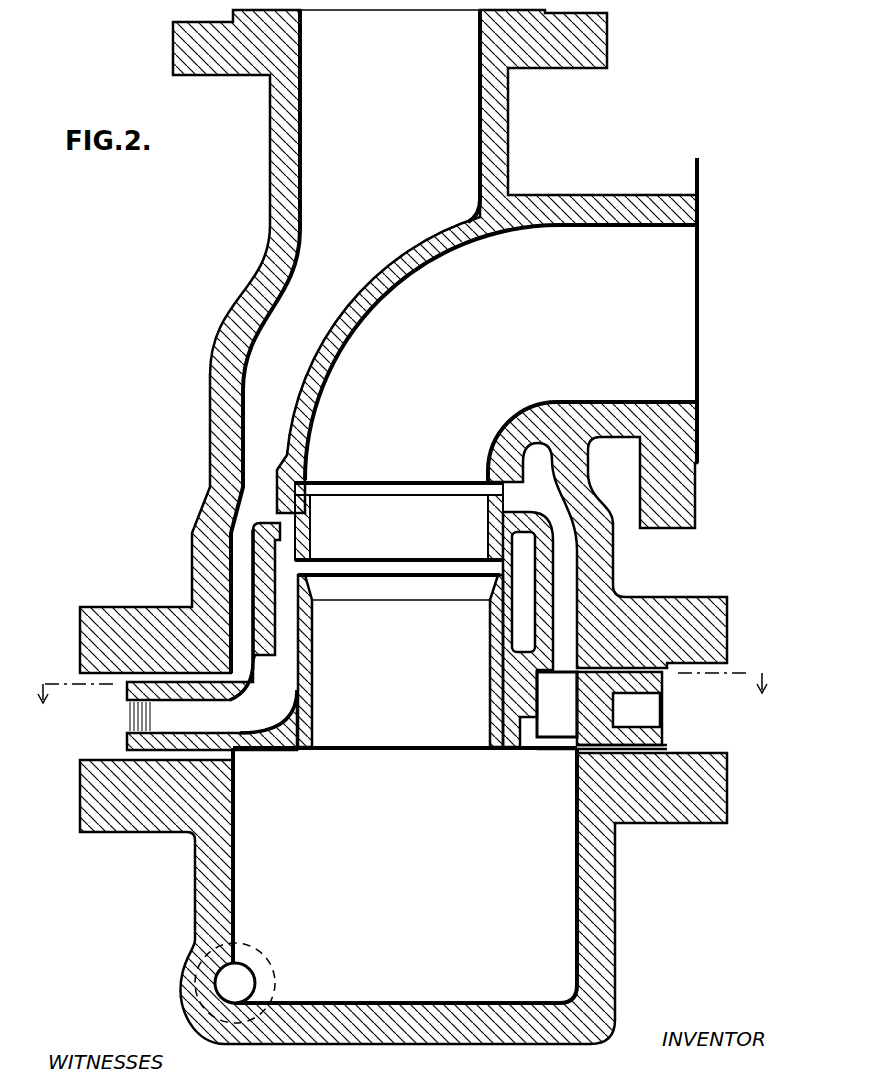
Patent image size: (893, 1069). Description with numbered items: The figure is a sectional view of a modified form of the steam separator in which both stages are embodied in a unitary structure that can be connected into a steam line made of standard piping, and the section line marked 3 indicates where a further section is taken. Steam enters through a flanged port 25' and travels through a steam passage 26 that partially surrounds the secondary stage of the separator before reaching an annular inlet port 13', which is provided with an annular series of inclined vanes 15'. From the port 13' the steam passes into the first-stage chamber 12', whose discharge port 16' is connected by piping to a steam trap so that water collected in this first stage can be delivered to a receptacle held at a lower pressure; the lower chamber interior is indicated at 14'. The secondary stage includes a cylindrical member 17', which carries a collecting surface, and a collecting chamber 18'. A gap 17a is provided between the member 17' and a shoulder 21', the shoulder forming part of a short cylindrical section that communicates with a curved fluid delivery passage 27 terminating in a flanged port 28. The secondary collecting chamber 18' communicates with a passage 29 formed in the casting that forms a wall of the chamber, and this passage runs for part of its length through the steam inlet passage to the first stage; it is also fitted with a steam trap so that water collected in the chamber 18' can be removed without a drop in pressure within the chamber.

The flanged port 25' is at (280, 341).
The steam passage 26 is at (365, 336).
The curved fluid delivery passage 27 is at (501, 246).
The flanged port 28 is at (683, 369).
The shoulder 21' is at (399, 521).
The cylindrical member 17' is at (400, 661).
The gap 17a is at (492, 568).
The collecting chamber 18' is at (492, 629).
The inclined vanes 15' is at (599, 708).
The annular inlet port 13' is at (592, 729).
The passage 29 is at (243, 710).
The lower chamber 14' is at (405, 769).
The chamber 12' is at (403, 896).
The discharge port 16' is at (264, 983).
The section line 3- 3 is at (404, 703).